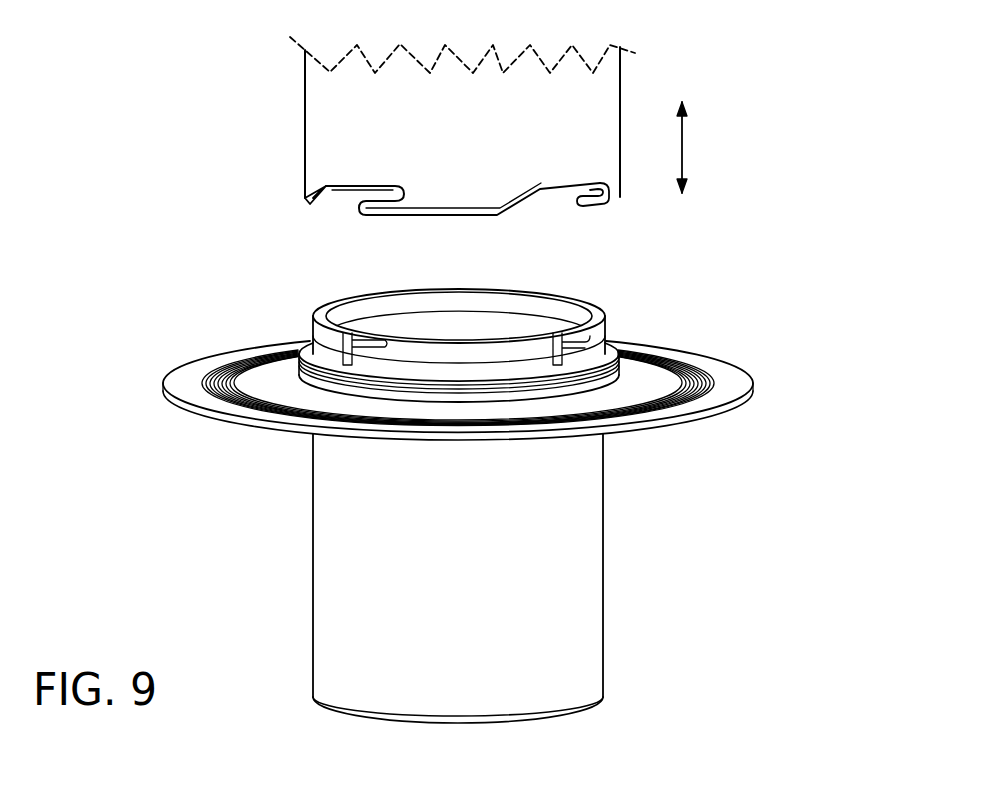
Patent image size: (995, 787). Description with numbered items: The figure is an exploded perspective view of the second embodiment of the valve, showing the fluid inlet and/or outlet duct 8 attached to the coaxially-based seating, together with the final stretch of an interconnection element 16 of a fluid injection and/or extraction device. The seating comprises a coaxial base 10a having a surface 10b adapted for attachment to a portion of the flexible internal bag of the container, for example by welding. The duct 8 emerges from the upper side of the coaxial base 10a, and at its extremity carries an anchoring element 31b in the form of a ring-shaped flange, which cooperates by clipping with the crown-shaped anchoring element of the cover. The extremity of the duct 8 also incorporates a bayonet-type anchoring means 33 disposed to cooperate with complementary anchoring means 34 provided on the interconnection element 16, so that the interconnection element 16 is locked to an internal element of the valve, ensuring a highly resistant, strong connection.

The fluid inlet and/or outlet duct 8 is at (520, 292).
The coaxial base 10a is at (170, 370).
The surface 10b is at (203, 392).
The interconnection element 16 is at (347, 93).
The anchoring element 31b is at (607, 355).
The bayonet-type anchoring means 33 is at (318, 330).
The complementary anchoring means 34 is at (353, 186).